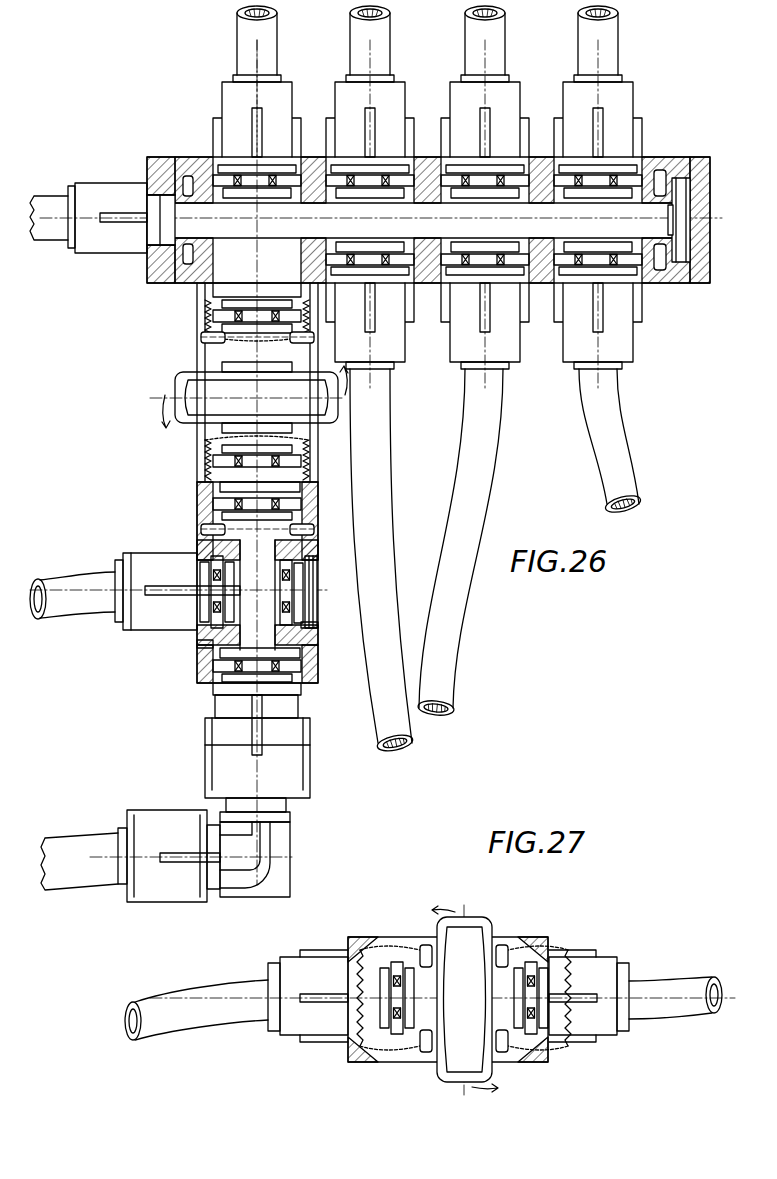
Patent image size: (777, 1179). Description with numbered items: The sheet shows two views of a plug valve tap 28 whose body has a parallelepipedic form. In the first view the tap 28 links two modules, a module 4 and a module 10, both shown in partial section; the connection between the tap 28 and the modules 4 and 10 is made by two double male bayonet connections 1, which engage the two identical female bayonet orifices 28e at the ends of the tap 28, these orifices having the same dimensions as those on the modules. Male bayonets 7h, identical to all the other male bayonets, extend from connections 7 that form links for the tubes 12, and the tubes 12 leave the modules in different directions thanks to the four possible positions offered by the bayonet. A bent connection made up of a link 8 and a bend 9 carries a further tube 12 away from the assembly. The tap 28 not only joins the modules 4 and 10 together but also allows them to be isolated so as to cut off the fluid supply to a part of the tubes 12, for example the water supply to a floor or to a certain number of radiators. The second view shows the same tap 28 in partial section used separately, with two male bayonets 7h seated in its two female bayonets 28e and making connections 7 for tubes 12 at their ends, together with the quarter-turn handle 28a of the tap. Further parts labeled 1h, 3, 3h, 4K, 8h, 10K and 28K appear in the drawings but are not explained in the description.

In FIG. 26, the double male bayonet connection 1 is at (222, 306).
In FIG. 26, the sleeve ring lug 1h is at (215, 290).
In FIG. 26, the plug 3 is at (718, 270).
In FIG. 26, the plug head 3h is at (690, 278).
In FIG. 26, the module 4 is at (166, 158).
In FIG. 26, the retaining ring 4K is at (190, 178).
In FIG. 26, the connection 7 is at (340, 100).
In FIG. 27, the connection 7 is at (296, 978).
In FIG. 26, the male bayonet 7h is at (292, 178).
In FIG. 27, the male bayonet 7h is at (372, 965).
In FIG. 26, the link 8 is at (222, 742).
In FIG. 26, the coupling flange 8h is at (222, 680).
In FIG. 26, the bend 9 is at (174, 828).
In FIG. 26, the module 10 is at (215, 658).
In FIG. 26, the housing groove 10K is at (298, 530).
In FIG. 26, the tube 12 is at (350, 58).
In FIG. 27, the tube 12 is at (183, 1002).
In FIG. 26, the plug valve tap 28 is at (203, 437).
In FIG. 27, the plug valve tap 28 is at (505, 952).
In FIG. 26, the quarter turn handle 28a is at (200, 392).
In FIG. 27, the quarter turn handle 28a is at (472, 942).
In FIG. 26, the female bayonet orifice 28e is at (210, 320).
In FIG. 27, the female bayonet orifice 28e is at (362, 946).
In FIG. 26, the valve locking lug 28K is at (300, 343).
In FIG. 27, the valve locking lug 28K is at (428, 1050).